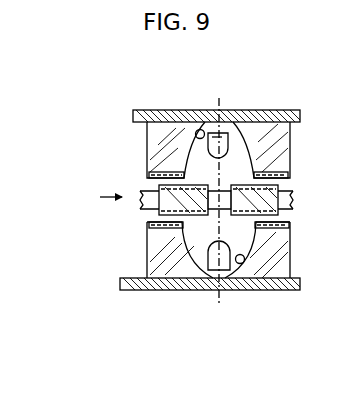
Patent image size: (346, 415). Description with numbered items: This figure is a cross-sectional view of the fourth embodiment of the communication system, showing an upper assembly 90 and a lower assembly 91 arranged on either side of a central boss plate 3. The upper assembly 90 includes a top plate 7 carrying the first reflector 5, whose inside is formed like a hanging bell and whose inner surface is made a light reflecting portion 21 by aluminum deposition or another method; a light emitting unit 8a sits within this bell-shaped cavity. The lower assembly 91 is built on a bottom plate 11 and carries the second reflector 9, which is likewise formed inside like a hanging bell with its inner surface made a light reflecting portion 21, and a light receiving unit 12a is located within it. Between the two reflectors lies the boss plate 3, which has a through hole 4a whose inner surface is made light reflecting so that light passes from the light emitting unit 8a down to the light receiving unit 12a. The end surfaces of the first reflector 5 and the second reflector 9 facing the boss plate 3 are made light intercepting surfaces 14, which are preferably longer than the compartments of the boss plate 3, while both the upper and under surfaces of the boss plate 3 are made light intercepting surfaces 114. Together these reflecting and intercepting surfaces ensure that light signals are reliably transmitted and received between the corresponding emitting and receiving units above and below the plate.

The upper assembly 90 is at (194, 77).
The lower assembly 91 is at (172, 314).
The top plate 7 is at (291, 110).
The first reflector 5 is at (283, 153).
The light intercepting surface 14 is at (153, 172).
The light emitting unit 8a is at (225, 137).
The light reflecting portion 21 is at (196, 131).
The through hole 4a is at (221, 193).
The boss plate 3 is at (292, 198).
The light intercepting surface 114 is at (158, 187).
The second reflector 9 is at (285, 242).
The light receiving unit 12a is at (211, 246).
The bottom plate 11 is at (283, 290).